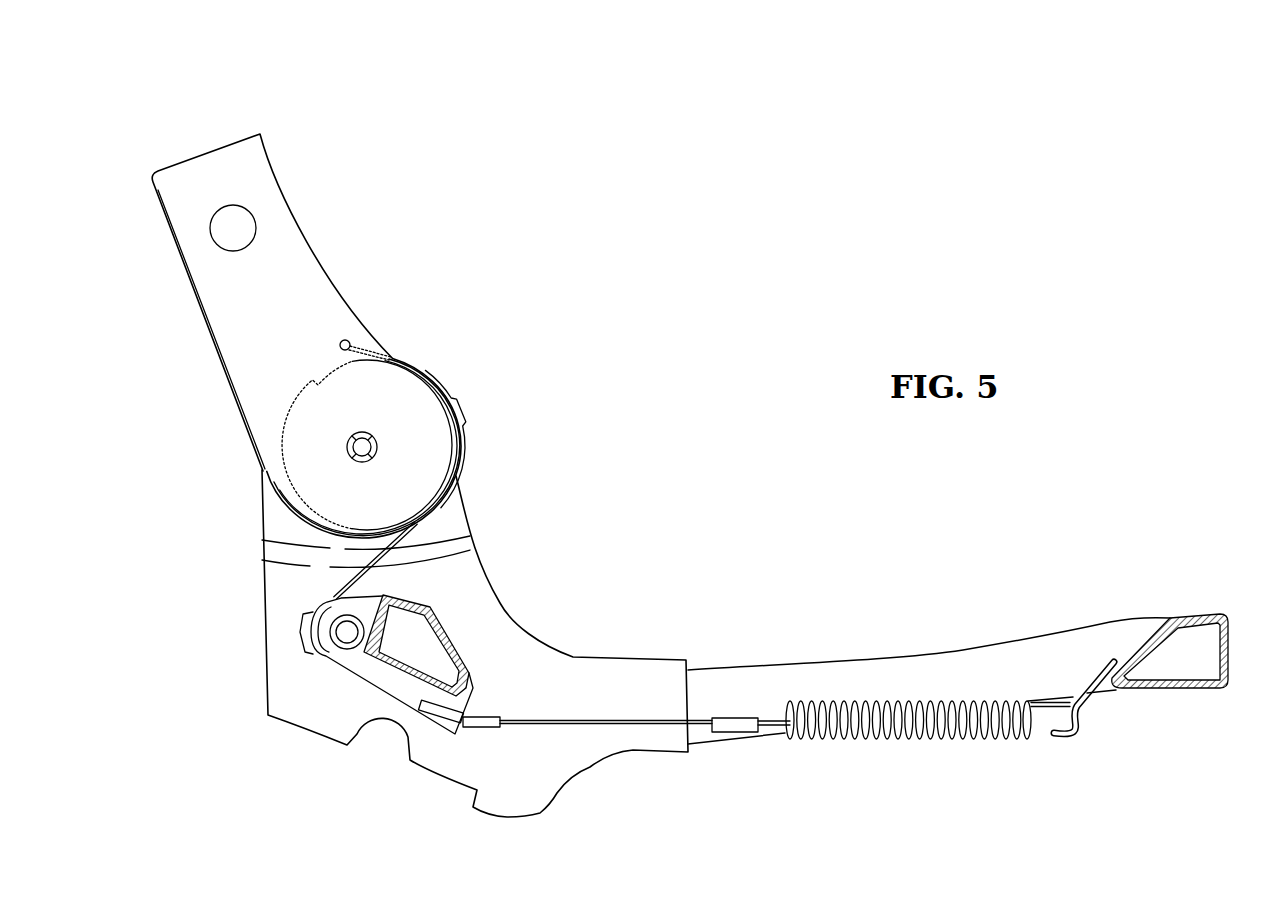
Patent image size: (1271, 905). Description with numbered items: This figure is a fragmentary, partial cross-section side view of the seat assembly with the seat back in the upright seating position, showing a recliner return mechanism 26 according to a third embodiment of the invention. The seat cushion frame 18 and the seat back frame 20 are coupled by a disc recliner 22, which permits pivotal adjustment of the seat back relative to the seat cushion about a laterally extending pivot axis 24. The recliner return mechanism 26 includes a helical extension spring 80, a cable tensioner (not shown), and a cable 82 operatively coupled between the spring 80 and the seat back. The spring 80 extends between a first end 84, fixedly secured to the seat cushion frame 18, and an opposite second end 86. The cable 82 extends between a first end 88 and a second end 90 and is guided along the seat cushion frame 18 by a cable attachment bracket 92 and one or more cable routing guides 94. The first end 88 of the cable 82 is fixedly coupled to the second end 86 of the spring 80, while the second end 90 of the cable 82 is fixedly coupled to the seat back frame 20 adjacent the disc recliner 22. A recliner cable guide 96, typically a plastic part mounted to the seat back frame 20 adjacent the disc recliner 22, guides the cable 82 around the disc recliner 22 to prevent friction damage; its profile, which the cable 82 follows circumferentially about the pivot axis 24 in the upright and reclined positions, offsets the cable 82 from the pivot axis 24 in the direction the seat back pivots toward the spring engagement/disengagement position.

The seat cushion frame 18 is at (1072, 638).
The seat back frame 20 is at (283, 220).
The disc recliner 22 is at (437, 390).
The pivot axis 24 is at (350, 450).
The recliner return mechanism 26 is at (560, 505).
The helical extension spring 80 is at (878, 740).
The cable 82 is at (575, 722).
The first end of the spring 84 is at (1055, 703).
The second end of the spring 86 is at (775, 723).
The first end of the cable 88 is at (675, 727).
The second end of the cable 90 is at (397, 358).
The cable attachment bracket 92 is at (470, 668).
The cable routing guide 94 is at (317, 632).
The recliner cable guide 96 is at (457, 443).